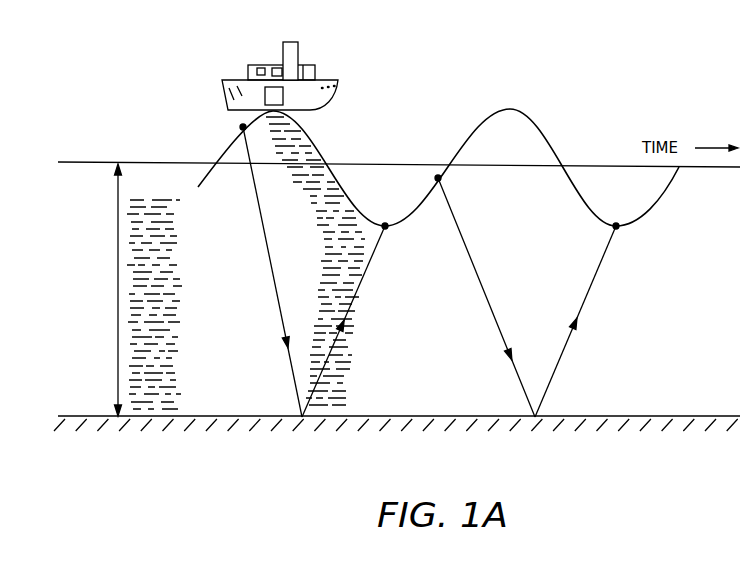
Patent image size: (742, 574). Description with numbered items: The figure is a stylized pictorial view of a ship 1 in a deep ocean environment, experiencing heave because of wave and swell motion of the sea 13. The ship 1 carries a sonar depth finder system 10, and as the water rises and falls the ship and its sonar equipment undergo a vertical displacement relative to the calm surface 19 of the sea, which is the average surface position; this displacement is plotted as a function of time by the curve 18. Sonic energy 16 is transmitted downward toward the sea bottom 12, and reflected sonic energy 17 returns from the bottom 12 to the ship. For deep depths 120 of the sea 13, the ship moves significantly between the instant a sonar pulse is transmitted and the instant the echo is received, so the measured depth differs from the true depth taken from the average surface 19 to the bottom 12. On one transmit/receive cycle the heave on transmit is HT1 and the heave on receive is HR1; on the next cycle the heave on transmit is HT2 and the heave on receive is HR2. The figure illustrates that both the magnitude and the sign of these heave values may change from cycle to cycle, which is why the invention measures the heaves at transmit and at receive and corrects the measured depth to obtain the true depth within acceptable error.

The ship 1 is at (333, 92).
The sonar depth finder system 10 is at (264, 104).
The sea bottom 12 is at (387, 417).
The sea 13 is at (554, 267).
The sonic energy 16 is at (276, 298).
The reflected sonic energy 17 is at (358, 295).
The heave curve 18 is at (543, 137).
The calm surface 19 is at (135, 162).
The depth 120 is at (117, 322).
The heave on transmit HT1 is at (243, 127).
The heave on transmit HT2 is at (438, 178).
The heave on receive HR1 is at (385, 226).
The heave on receive HR2 is at (616, 226).